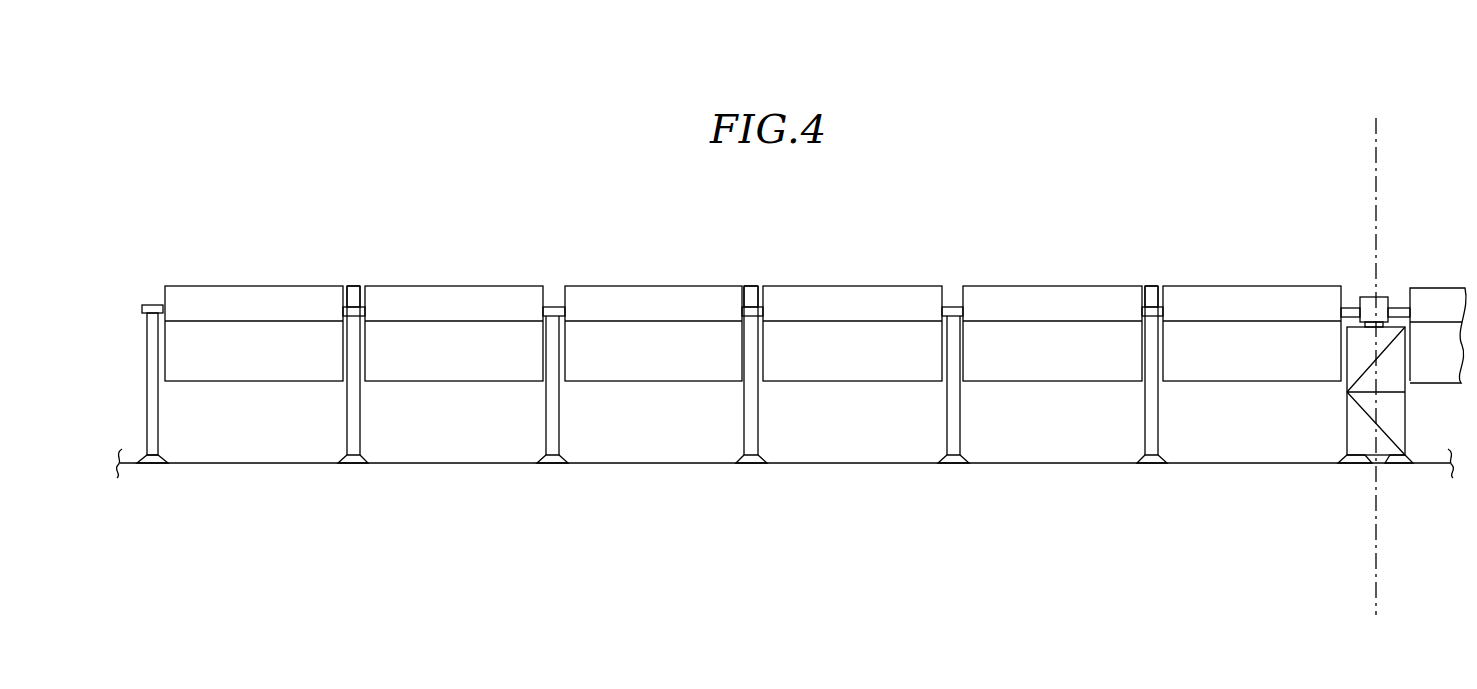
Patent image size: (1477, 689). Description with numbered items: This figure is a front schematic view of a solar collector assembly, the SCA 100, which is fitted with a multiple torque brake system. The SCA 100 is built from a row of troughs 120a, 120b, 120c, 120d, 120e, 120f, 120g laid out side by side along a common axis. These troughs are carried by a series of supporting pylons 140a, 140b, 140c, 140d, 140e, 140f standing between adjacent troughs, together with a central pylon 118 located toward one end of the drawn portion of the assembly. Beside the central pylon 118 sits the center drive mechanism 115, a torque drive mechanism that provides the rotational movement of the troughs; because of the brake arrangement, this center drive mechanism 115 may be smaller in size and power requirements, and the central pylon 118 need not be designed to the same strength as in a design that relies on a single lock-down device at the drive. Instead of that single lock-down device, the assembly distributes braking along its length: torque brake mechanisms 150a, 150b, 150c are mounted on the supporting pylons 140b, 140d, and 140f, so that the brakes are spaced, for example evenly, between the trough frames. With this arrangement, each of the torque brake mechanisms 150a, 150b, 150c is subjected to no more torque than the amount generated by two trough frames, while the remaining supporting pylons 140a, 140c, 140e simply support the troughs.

The SCA 100 is at (1408, 98).
The center drive mechanism 115 is at (1370, 296).
The central pylon 118 is at (1383, 455).
The trough 120a is at (255, 285).
The trough 120b is at (453, 285).
The trough 120c is at (652, 285).
The trough 120d is at (852, 285).
The trough 120e is at (1051, 285).
The trough 120f is at (1251, 285).
The trough 120g is at (1427, 288).
The supporting pylon 140a is at (152, 466).
The supporting pylon 140b is at (354, 466).
The supporting pylon 140c is at (553, 466).
The supporting pylon 140d is at (752, 466).
The supporting pylon 140e is at (954, 466).
The supporting pylon 140f is at (1152, 466).
The torque brake mechanism 150a is at (351, 285).
The torque brake mechanism 150b is at (750, 285).
The torque brake mechanism 150c is at (1150, 285).